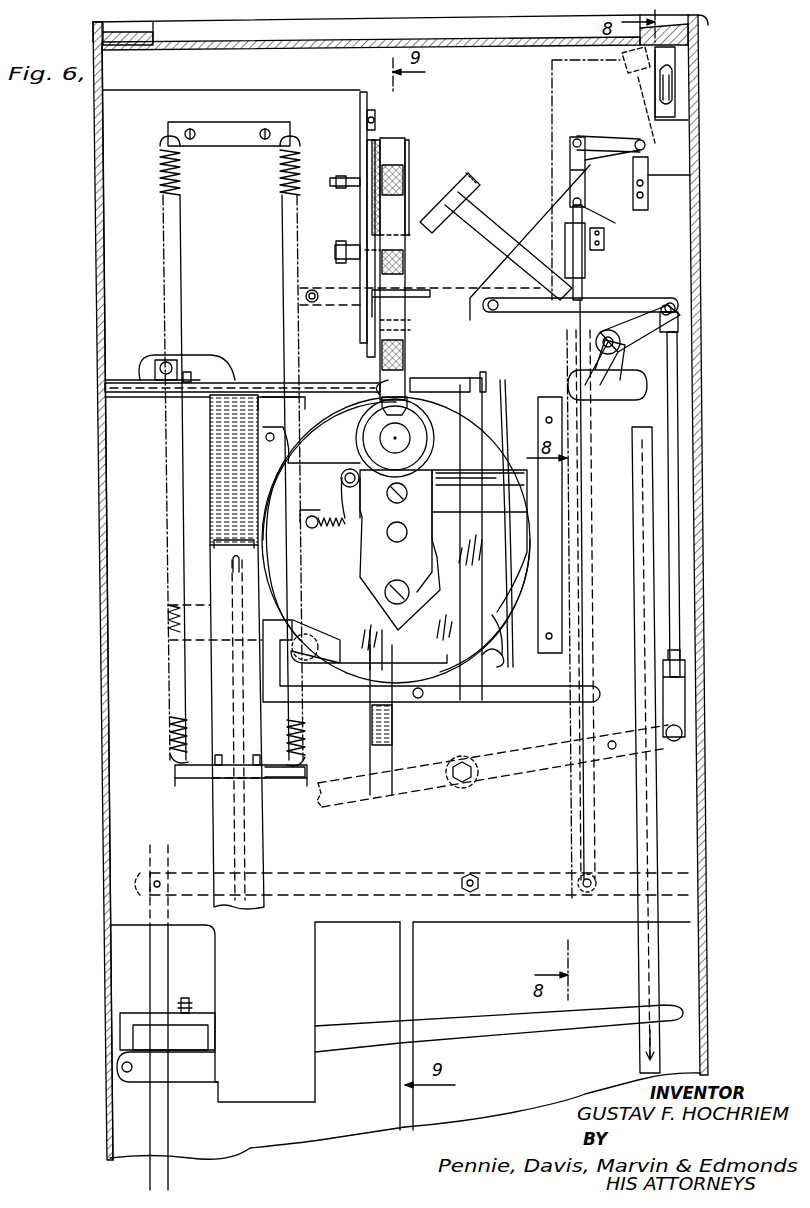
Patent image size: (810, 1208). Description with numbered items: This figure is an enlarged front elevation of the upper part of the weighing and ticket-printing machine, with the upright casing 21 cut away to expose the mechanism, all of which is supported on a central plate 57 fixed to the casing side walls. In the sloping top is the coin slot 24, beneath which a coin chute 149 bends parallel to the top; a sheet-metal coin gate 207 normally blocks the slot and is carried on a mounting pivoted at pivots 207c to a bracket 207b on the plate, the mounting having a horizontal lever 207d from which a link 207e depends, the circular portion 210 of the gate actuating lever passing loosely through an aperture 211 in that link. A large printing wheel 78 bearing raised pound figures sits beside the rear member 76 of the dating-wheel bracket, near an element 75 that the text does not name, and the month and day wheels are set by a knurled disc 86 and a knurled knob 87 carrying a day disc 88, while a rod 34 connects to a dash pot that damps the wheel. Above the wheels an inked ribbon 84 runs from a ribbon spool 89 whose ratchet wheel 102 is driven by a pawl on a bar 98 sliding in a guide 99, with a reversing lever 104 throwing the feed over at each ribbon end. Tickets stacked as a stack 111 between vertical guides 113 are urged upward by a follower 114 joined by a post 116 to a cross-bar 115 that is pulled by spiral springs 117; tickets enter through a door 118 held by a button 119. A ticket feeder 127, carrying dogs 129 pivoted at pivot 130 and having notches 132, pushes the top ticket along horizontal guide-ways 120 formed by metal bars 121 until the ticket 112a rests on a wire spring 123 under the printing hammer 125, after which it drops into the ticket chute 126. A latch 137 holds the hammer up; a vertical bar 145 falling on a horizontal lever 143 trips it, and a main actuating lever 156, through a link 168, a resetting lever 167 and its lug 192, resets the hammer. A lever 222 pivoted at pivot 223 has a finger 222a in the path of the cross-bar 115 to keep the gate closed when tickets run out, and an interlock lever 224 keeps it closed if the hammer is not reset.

The upright casing 21 is at (702, 510).
The coin slot 24 is at (700, 22).
The rod 34 is at (413, 975).
The plate 57 is at (368, 915).
The lug 75 is at (505, 624).
The rear member 76 is at (497, 668).
The printing wheel 78 is at (510, 415).
The inked ribbon 84 is at (400, 336).
The knurled disc 86 is at (420, 430).
The knurled knob 87 is at (360, 437).
The disc 88 is at (405, 440).
The ribbon spool 89 is at (409, 158).
The bar 98 is at (368, 95).
The guide 99 is at (376, 118).
The ratchet wheel 102 is at (370, 212).
The reversing lever 104 is at (400, 290).
The stack of cardboard tickets 111 is at (218, 480).
The ticket 112a is at (395, 385).
The vertical guides 113 is at (228, 790).
The follower 114 is at (212, 550).
The cross-bar 115 is at (272, 775).
The post 116 is at (240, 729).
The spiral springs 117 is at (278, 185).
The door 118 is at (208, 603).
The button 119 is at (232, 565).
The horizontal guide-ways 120 is at (322, 392).
The metal bar 121 is at (336, 383).
The wire spring 123 is at (470, 375).
The printing hammer 125 is at (485, 220).
The ticket chute 126 is at (396, 540).
The ticket feeder 127 is at (147, 372).
The dogs 129 is at (195, 374).
The pivot 130 is at (233, 477).
The notches 132 is at (205, 393).
The latch 137 is at (632, 297).
The horizontal lever 143 is at (408, 872).
The vertical bar 145 is at (155, 970).
The coin chute 149 is at (722, 638).
The main actuating lever 156 is at (550, 770).
The printing hammer resetting lever 167 is at (690, 315).
The link 168 is at (679, 565).
The lug 192 is at (616, 374).
The coin gate 207 is at (660, 122).
The bracket 207b is at (735, 178).
The pivots 207c is at (637, 140).
The lever 207d is at (580, 135).
The link 207e is at (585, 175).
The circular portion 210 is at (604, 252).
The aperture 211 is at (573, 203).
The lever 222 is at (485, 697).
The finger 222a is at (300, 620).
The pivot 223 is at (418, 698).
The interlock lever 224 is at (600, 600).